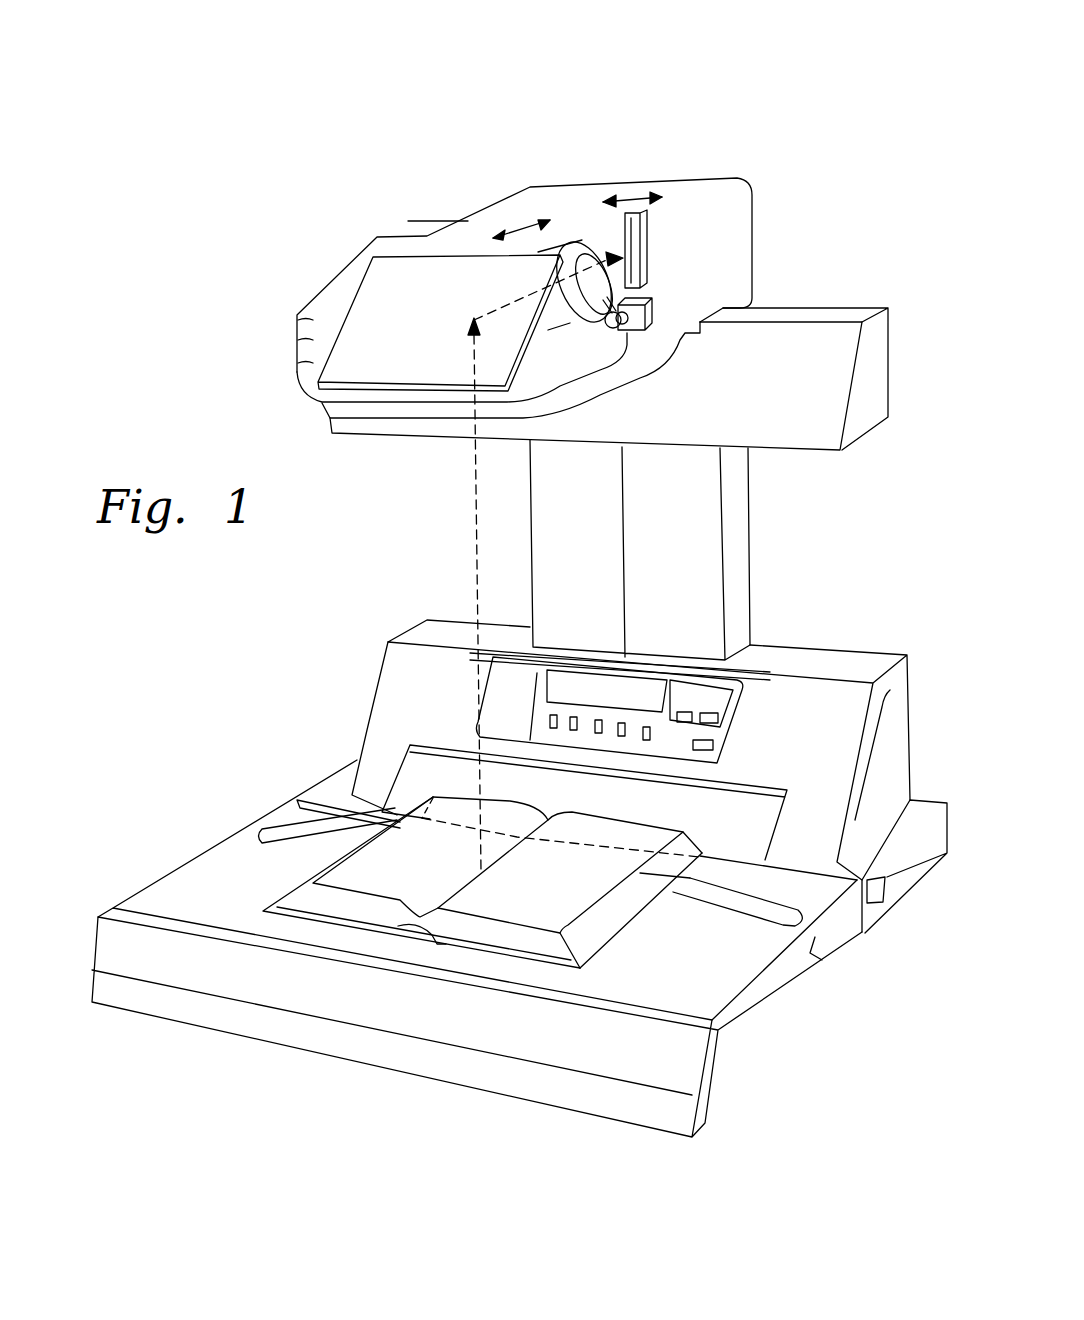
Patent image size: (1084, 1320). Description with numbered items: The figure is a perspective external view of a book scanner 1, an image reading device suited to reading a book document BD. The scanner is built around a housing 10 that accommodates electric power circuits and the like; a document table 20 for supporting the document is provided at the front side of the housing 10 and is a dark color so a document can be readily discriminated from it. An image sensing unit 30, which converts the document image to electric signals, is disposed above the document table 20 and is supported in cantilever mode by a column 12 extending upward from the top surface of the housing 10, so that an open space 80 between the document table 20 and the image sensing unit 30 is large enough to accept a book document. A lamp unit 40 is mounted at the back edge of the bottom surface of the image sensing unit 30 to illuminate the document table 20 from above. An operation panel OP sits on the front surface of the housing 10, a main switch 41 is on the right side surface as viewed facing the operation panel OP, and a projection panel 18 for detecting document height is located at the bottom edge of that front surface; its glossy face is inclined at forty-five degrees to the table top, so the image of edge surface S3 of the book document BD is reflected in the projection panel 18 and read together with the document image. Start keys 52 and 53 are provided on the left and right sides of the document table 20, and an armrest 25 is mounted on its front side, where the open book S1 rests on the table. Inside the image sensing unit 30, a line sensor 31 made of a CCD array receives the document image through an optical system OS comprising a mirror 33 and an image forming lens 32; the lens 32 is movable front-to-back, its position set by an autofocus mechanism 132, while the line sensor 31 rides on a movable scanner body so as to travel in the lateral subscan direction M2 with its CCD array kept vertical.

The book scanner 1 is at (147, 40).
The housing 10 is at (900, 753).
The column 12 is at (740, 552).
The projection panel 18 is at (402, 780).
The document table 20 is at (705, 967).
The armrest 25 is at (370, 1024).
The image sensing unit 30 is at (337, 268).
The line sensor 31 is at (642, 248).
The image forming lens 32 is at (574, 247).
The mirror 33 is at (425, 333).
The lamp unit 40 is at (885, 370).
The main switch 41 is at (880, 897).
The start key 52 is at (260, 837).
The start key 53 is at (800, 912).
The open space 80 is at (392, 553).
The autofocus mechanism 132 is at (657, 312).
The optical system OS is at (440, 247).
The subscan direction M2 is at (633, 193).
The operation panel OP is at (735, 720).
The book document BD is at (318, 870).
The document S1 is at (560, 899).
The edge surface S3 is at (630, 847).